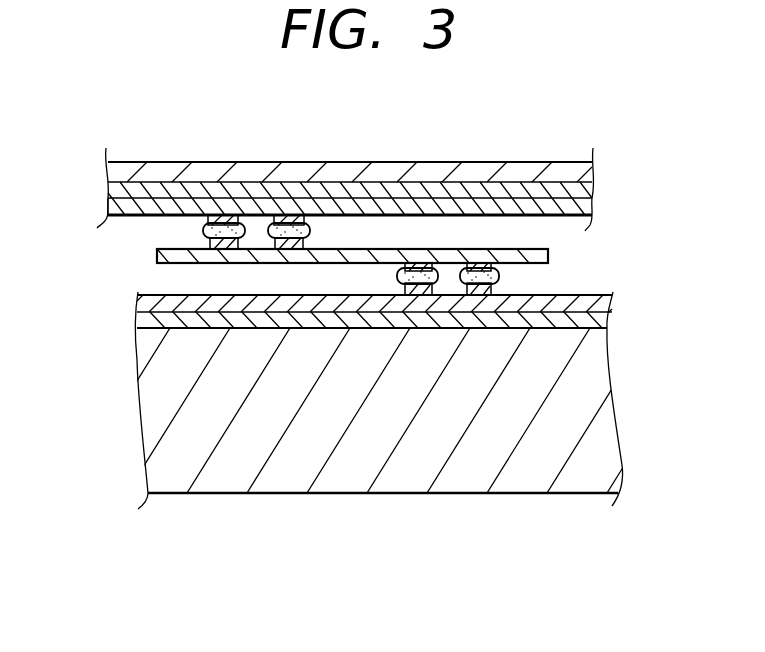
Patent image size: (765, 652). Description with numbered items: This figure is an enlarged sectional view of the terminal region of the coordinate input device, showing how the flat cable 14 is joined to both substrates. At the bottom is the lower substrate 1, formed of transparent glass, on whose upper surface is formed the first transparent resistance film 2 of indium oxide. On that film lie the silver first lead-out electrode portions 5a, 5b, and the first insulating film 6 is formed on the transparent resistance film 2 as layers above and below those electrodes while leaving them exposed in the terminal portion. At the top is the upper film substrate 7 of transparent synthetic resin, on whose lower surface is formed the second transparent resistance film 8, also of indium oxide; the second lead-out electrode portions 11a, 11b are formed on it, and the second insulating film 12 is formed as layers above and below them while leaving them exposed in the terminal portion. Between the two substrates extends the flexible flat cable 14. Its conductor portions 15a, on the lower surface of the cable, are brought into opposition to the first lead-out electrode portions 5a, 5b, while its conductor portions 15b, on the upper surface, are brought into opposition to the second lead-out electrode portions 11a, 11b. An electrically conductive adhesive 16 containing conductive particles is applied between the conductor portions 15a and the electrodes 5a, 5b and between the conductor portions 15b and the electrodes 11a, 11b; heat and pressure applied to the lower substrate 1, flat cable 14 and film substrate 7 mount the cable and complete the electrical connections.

The lower substrate 1 is at (281, 493).
The first transparent resistance film 2 is at (143, 321).
The first lead-out electrode portion 5a is at (398, 278).
The first lead-out electrode portion 5b is at (497, 290).
The first insulating film 6 is at (185, 296).
The upper film substrate 7 is at (257, 164).
The second transparent resistance film 8 is at (575, 191).
The second lead-out electrode portion 11a is at (228, 216).
The second lead-out electrode portion 11b is at (304, 216).
The second insulating film 12 is at (108, 216).
The flat cable 14 is at (548, 252).
The conductor portions 15a is at (493, 266).
The conductor portions 15b is at (210, 243).
The electrically conductive adhesive 16 is at (203, 230).